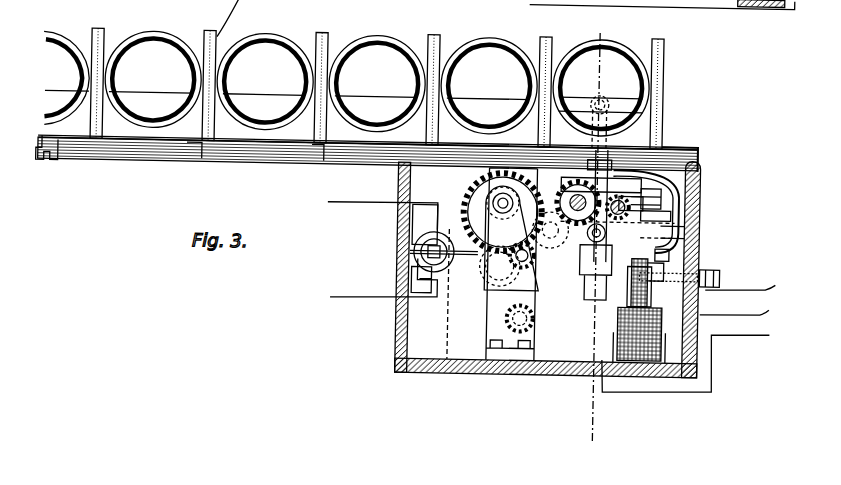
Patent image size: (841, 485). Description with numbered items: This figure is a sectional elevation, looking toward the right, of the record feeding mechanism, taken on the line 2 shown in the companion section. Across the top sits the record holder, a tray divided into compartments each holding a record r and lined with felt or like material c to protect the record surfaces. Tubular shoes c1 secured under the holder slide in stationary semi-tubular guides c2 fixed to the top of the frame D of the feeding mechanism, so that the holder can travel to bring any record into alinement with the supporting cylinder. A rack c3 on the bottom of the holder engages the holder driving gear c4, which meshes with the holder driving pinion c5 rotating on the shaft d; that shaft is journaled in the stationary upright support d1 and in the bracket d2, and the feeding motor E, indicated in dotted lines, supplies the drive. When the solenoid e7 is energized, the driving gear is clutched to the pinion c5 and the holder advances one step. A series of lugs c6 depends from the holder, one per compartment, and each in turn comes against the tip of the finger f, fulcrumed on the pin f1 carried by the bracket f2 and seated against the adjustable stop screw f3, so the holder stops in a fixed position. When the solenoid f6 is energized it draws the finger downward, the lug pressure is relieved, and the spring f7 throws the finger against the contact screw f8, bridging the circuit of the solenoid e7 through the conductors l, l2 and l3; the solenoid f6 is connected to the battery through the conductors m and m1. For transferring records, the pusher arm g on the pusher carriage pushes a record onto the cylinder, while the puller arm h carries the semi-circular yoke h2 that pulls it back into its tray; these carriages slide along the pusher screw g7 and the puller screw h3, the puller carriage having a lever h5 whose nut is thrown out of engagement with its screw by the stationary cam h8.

The record r is at (40, 38).
The lining c is at (437, 52).
The tubular shoe c1 is at (357, 170).
The semi-tubular guide c2 is at (696, 156).
The rack c3 is at (46, 170).
The holder driving gear c4 is at (468, 190).
The holder driving pinion c5 is at (556, 250).
The lug c6 is at (195, 170).
The frame D is at (397, 332).
The feeding motor E is at (510, 264).
The conductor l is at (341, 208).
The conductor l2 is at (750, 281).
The conductor l3 is at (690, 232).
The solenoid e7 is at (412, 250).
The pusher arm g is at (503, 200).
The pusher screw g7 is at (572, 195).
The shaft d is at (500, 288).
The stationary upright support d1 is at (510, 325).
The bracket d2 is at (474, 282).
The section line 2 is at (596, 238).
The puller arm h is at (630, 148).
The semi-circular yoke h2 is at (648, 104).
The puller screw h3 is at (680, 172).
The lever h5 is at (690, 196).
The stationary cam h8 is at (700, 208).
The finger f is at (665, 201).
The pin f1 is at (670, 216).
The bracket f2 is at (657, 268).
The adjustable stop screw f3 is at (630, 285).
The solenoid f6 is at (655, 348).
The spring f7 is at (670, 256).
The contact screw f8 is at (690, 290).
The conductor m is at (666, 391).
The conductor m1 is at (743, 306).